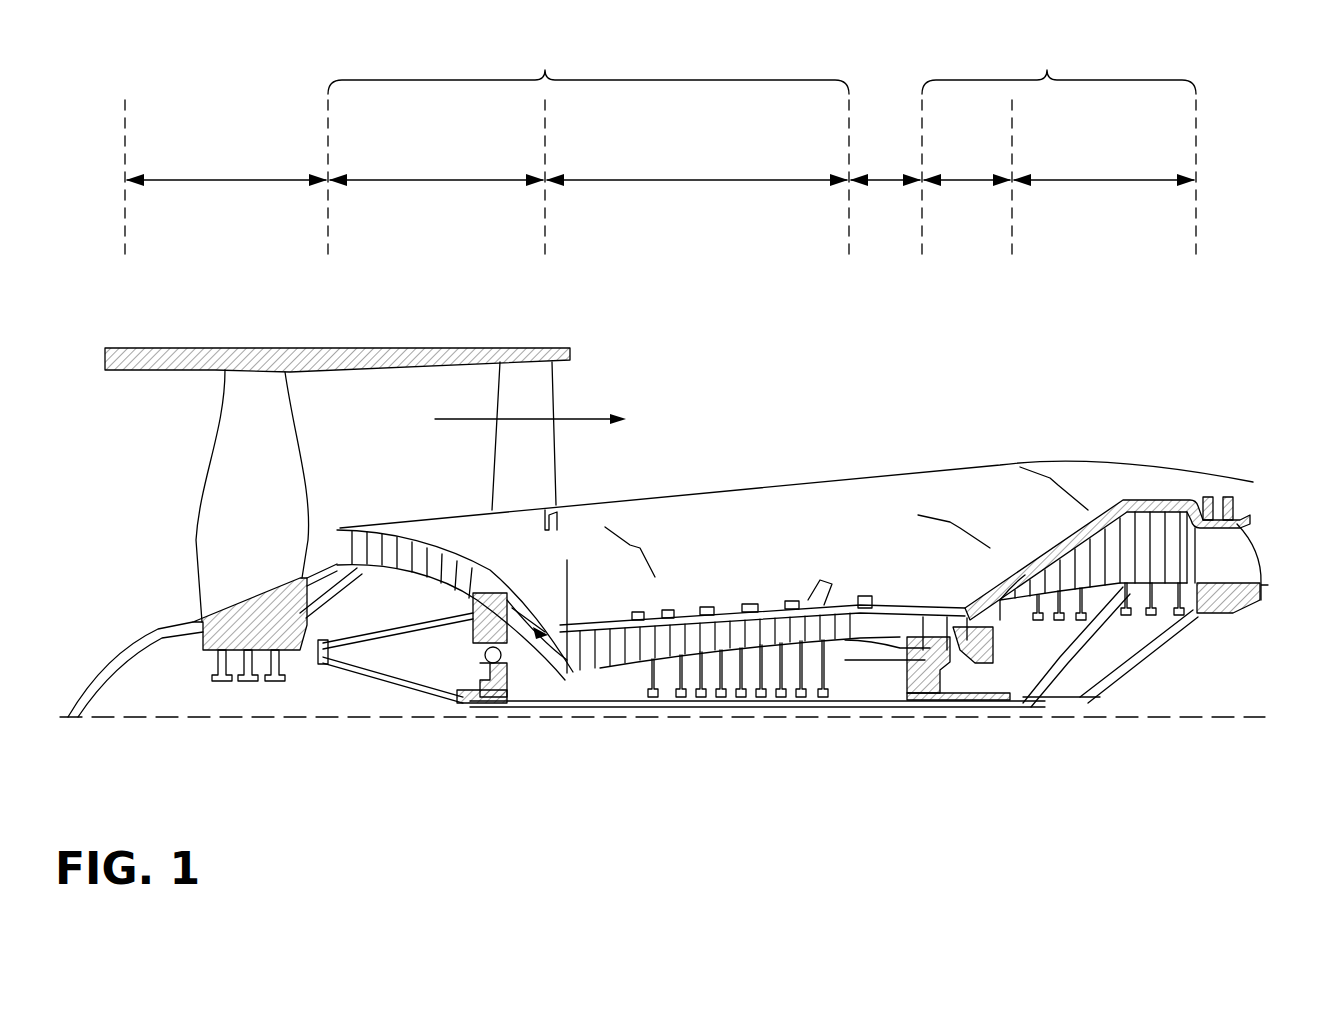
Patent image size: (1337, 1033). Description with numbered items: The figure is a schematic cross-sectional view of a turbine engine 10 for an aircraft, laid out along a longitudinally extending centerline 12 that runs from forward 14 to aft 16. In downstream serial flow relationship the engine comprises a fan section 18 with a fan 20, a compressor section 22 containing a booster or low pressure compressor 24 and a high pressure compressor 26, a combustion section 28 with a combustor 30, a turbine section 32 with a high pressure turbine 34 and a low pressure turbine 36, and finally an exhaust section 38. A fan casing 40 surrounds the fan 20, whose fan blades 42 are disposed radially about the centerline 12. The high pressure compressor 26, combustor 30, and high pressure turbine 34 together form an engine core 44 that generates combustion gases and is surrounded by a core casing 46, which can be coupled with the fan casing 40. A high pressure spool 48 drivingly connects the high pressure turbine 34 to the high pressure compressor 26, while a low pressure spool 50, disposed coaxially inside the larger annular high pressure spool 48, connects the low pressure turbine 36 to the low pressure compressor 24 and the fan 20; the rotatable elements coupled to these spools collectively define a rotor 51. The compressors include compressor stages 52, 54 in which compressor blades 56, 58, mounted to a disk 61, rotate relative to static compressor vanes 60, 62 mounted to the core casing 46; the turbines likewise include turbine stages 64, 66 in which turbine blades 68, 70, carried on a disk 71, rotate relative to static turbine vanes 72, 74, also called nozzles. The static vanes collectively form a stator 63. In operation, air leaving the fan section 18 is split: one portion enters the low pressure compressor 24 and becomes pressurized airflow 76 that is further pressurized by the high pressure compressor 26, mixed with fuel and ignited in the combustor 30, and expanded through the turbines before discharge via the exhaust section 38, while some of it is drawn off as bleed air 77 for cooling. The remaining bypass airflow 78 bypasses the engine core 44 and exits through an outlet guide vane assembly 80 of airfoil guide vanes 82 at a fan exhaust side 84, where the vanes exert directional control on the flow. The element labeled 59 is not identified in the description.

The turbine engine 10 is at (878, 338).
The engine centerline 12 is at (230, 722).
The forward 14 is at (95, 481).
The aft 16 is at (1310, 566).
The fan section 18 is at (226, 169).
The fan 20 is at (158, 559).
The compressor section 22 is at (588, 66).
The low pressure compressor 24 is at (436, 169).
The high pressure compressor 26 is at (697, 169).
The combustion section 28 is at (885, 165).
The combustor 30 is at (895, 620).
The turbine section 32 is at (1059, 66).
The high pressure turbine 34 is at (967, 165).
The low pressure turbine 36 is at (1104, 169).
The exhaust section 38 is at (1278, 520).
The fan casing 40 is at (246, 360).
The fan blades 42 is at (282, 428).
The engine core 44 is at (830, 518).
The core casing 46 is at (1145, 505).
The high pressure spool 48 is at (862, 690).
The low pressure spool 50 is at (471, 712).
The rotor 51 is at (430, 590).
The compressor stages 52 is at (445, 556).
The compressor stages 54 is at (633, 546).
The compressor blades 56 is at (370, 520).
The compressor blades 58 is at (607, 667).
The stator vane 59 is at (360, 576).
The static compressor vanes 60 is at (350, 528).
The disk 61 is at (630, 690).
The static compressor vanes 62 is at (600, 640).
The stator 63 is at (600, 690).
The turbine stages 64 is at (954, 521).
The turbine stages 66 is at (1055, 486).
The turbine blades 68 is at (937, 620).
The turbine blades 70 is at (1045, 555).
The disk 71 is at (940, 680).
The static turbine vanes 72 is at (912, 620).
The static turbine vanes 74 is at (1010, 568).
The pressurized airflow 76 is at (552, 575).
The bleed air 77 is at (700, 608).
The bypass airflow 78 is at (460, 419).
The outlet guide vane assembly 80 is at (578, 470).
The airfoil guide vanes 82 is at (505, 458).
The fan exhaust side 84 is at (606, 378).